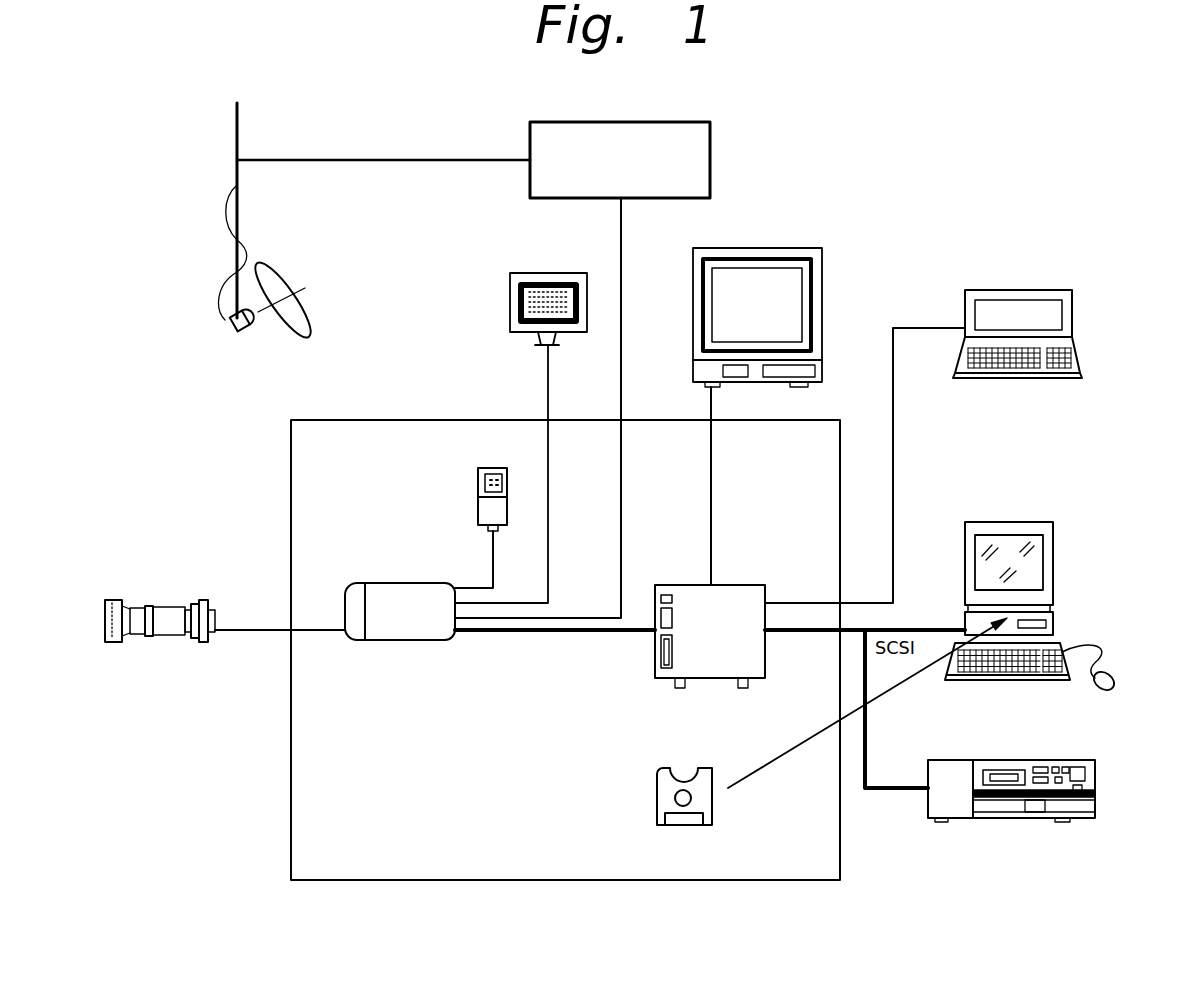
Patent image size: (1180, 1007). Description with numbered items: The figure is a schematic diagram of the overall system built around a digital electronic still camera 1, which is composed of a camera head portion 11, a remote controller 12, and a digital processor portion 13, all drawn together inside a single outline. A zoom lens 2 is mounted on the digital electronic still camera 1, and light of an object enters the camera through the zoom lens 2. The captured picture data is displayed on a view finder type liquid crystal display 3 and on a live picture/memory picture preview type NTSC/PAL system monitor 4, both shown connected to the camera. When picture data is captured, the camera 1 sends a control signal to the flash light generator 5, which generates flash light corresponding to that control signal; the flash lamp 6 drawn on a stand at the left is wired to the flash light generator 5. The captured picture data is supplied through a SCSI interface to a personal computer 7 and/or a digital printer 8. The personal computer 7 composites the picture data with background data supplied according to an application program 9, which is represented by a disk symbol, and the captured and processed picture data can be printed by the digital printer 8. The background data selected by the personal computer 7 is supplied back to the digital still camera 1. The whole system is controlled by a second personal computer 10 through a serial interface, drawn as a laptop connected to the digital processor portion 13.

The digital electronic still camera 1 is at (291, 786).
The zoom lens 2 is at (160, 643).
The liquid crystal display 3 is at (510, 300).
The monitor 4 is at (757, 248).
The flash light generator 5 is at (710, 158).
The flash lamp 6 is at (225, 318).
The personal computer 7 is at (1053, 565).
The digital printer 8 is at (1095, 788).
The application program 9 is at (657, 797).
The personal computer 10 is at (1015, 290).
The camera head portion 11 is at (402, 641).
The remote controller 12 is at (490, 468).
The digital processor portion 13 is at (745, 585).